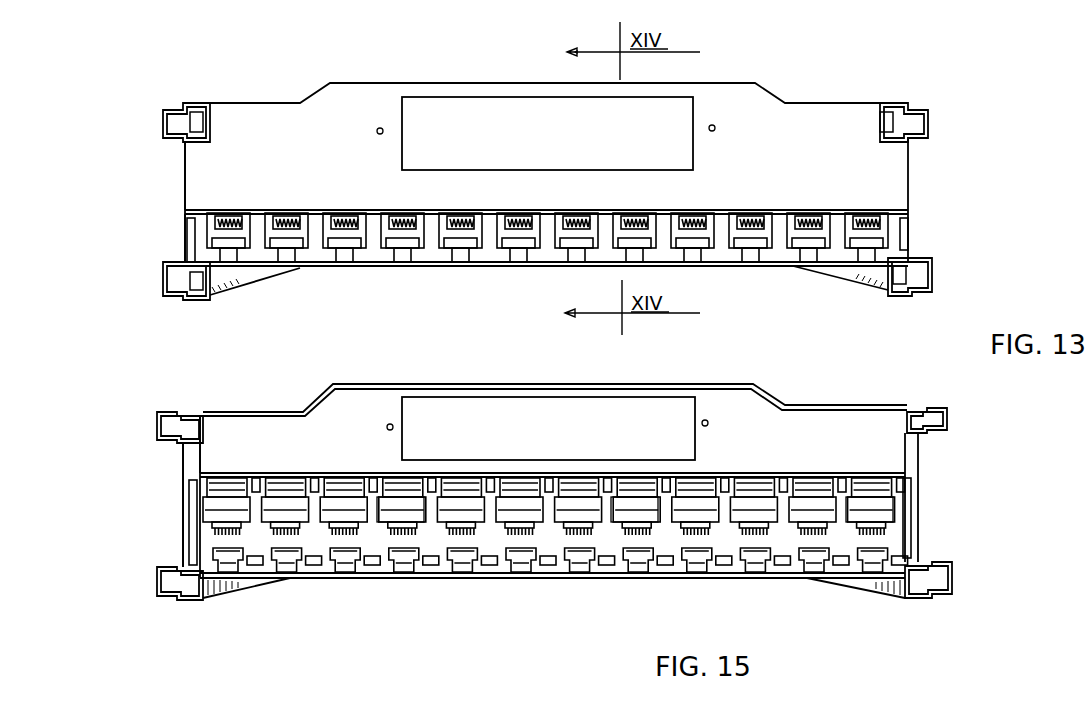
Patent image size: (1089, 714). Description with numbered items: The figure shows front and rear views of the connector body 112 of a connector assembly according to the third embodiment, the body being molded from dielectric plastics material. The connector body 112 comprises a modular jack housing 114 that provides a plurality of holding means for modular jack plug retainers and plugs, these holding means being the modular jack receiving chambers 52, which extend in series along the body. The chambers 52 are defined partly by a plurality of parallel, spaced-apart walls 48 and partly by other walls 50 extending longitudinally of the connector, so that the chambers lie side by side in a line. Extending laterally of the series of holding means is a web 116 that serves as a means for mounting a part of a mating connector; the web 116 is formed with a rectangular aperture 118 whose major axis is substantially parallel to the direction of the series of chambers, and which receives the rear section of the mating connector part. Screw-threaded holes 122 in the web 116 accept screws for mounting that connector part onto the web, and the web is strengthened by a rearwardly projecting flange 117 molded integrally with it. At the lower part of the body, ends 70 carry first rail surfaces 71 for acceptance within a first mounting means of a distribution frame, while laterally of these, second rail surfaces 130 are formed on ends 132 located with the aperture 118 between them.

In FIG. 13, the connector body 112 is at (300, 95).
In FIG. 15, the connector body 112 is at (312, 393).
In FIG. 13, the modular jack housing 114 is at (185, 213).
In FIG. 15, the modular jack housing 114 is at (183, 528).
In FIG. 13, the web 116 is at (197, 178).
In FIG. 15, the web 116 is at (362, 412).
In FIG. 15, the rearwardly projecting flange 117 is at (532, 384).
In FIG. 13, the rectangular aperture 118 is at (588, 136).
In FIG. 15, the rectangular aperture 118 is at (566, 441).
In FIG. 13, the screw-threaded holes 122 is at (380, 128).
In FIG. 15, the screw-threaded holes 122 is at (389, 431).
In FIG. 13, the second rail surfaces 130 is at (175, 103).
In FIG. 13, the ends 132 is at (165, 115).
In FIG. 13, the walls 50 is at (187, 216).
In FIG. 15, the walls 50 is at (877, 488).
In FIG. 13, the ends 70 is at (165, 287).
In FIG. 13, the first rail surfaces 71 is at (163, 261).
In FIG. 15, the walls 48 is at (368, 508).
In FIG. 15, the modular jack receiving chambers 52 is at (630, 512).